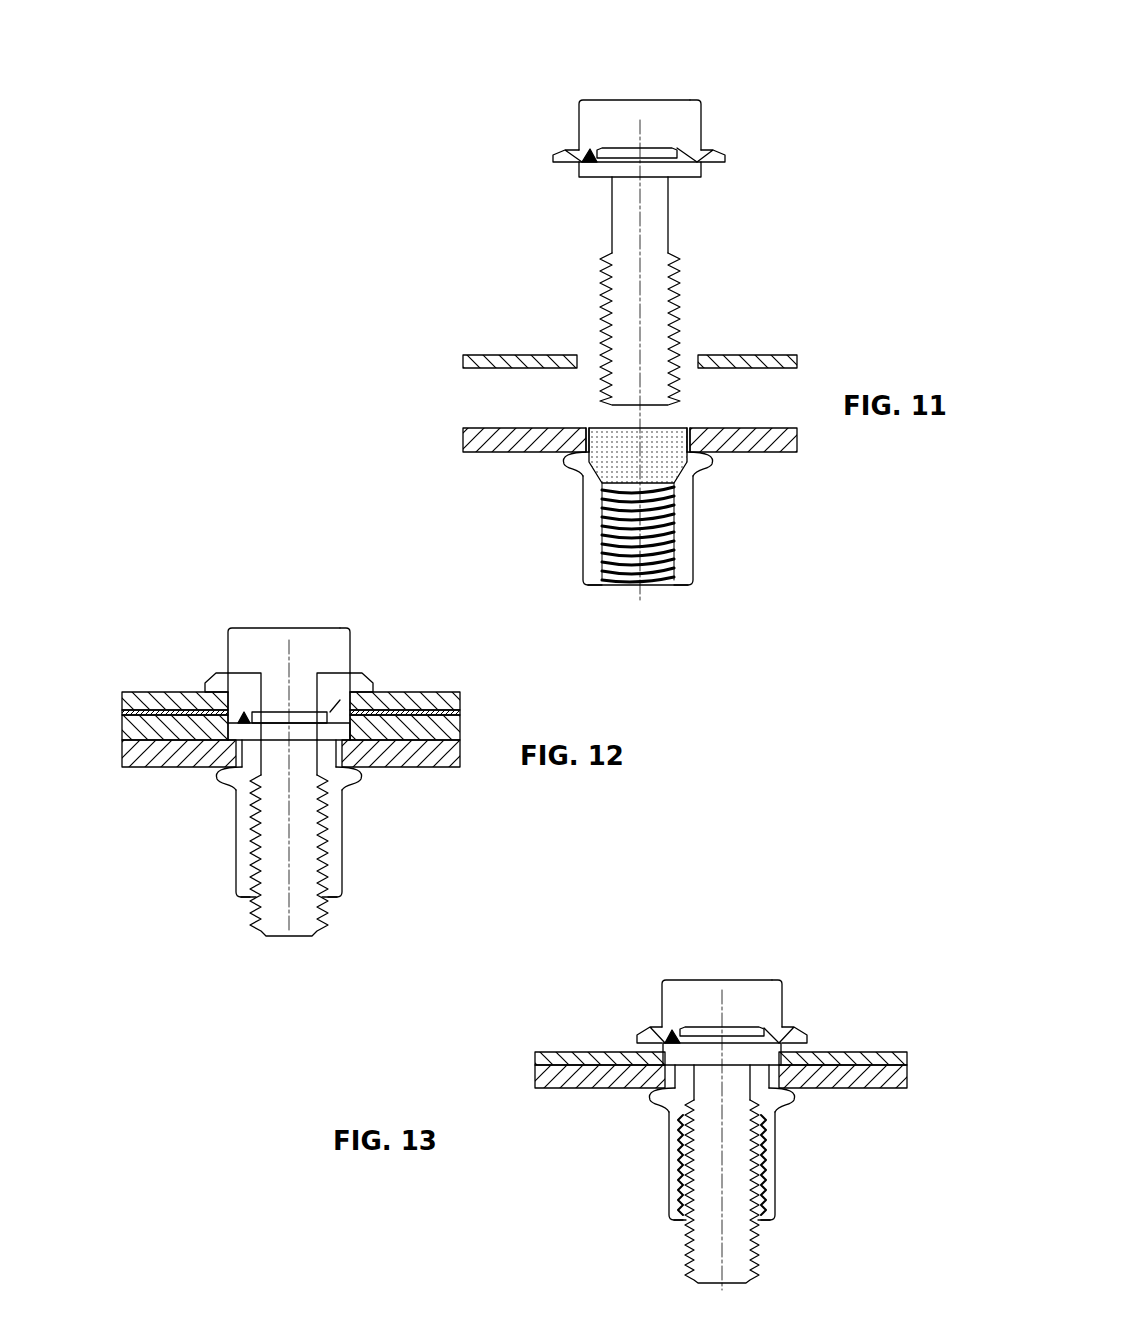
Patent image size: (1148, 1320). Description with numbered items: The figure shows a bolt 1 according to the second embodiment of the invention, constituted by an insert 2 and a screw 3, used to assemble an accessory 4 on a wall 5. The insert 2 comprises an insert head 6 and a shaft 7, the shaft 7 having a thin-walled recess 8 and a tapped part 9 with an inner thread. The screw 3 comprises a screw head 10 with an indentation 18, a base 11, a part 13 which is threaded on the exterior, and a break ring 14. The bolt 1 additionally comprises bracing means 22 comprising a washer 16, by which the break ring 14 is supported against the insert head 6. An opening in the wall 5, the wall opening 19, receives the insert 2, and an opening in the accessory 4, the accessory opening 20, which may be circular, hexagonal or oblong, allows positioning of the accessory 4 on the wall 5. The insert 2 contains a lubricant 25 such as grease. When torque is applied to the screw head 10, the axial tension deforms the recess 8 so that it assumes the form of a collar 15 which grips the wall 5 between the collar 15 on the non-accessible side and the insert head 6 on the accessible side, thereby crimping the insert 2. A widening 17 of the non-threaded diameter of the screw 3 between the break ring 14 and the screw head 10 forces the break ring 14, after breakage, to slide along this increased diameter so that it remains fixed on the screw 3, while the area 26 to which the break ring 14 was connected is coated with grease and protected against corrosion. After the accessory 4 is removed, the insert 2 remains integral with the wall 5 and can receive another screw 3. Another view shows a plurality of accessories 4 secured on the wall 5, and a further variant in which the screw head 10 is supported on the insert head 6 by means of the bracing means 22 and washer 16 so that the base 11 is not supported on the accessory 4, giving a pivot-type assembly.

In FIG. 11, the bolt 1 is at (555, 105).
In FIG. 12, the bolt 1 is at (160, 592).
In FIG. 13, the bolt 1 is at (617, 945).
In FIG. 11, the insert 2 is at (565, 550).
In FIG. 12, the insert 2 is at (218, 868).
In FIG. 13, the insert 2 is at (645, 1192).
In FIG. 11, the screw 3 is at (585, 97).
In FIG. 12, the screw 3 is at (232, 625).
In FIG. 13, the screw 3 is at (667, 960).
In FIG. 11, the accessory 4 is at (463, 355).
In FIG. 12, the accessory 4 is at (122, 692).
In FIG. 13, the accessory 4 is at (535, 1052).
In FIG. 11, the wall 5 is at (463, 432).
In FIG. 12, the wall 5 is at (122, 752).
In FIG. 13, the wall 5 is at (535, 1080).
In FIG. 11, the insert head 6 is at (586, 430).
In FIG. 12, the insert head 6 is at (225, 740).
In FIG. 13, the insert head 6 is at (660, 1070).
In FIG. 11, the shaft 7 is at (580, 487).
In FIG. 12, the shaft 7 is at (232, 800).
In FIG. 13, the shaft 7 is at (662, 1128).
In FIG. 11, the recess 8 is at (566, 456).
In FIG. 12, the recess 8 is at (232, 770).
In FIG. 13, the recess 8 is at (655, 1093).
In FIG. 11, the tapped part 9 is at (620, 585).
In FIG. 12, the tapped part 9 is at (255, 895).
In FIG. 13, the tapped part 9 is at (685, 1218).
In FIG. 11, the screw head 10 is at (685, 108).
In FIG. 12, the screw head 10 is at (338, 628).
In FIG. 13, the screw head 10 is at (770, 965).
In FIG. 11, the base 11 is at (720, 155).
In FIG. 12, the base 11 is at (368, 688).
In FIG. 13, the base 11 is at (800, 1035).
In FIG. 11, the threaded part 13 is at (676, 290).
In FIG. 12, the threaded part 13 is at (328, 900).
In FIG. 13, the threaded part 13 is at (758, 1230).
In FIG. 11, the break ring 14 is at (624, 150).
In FIG. 12, the break ring 14 is at (275, 712).
In FIG. 13, the break ring 14 is at (702, 1027).
In FIG. 11, the collar 15 is at (712, 455).
In FIG. 12, the collar 15 is at (345, 775).
In FIG. 13, the collar 15 is at (790, 1100).
In FIG. 11, the washer 16 is at (708, 150).
In FIG. 12, the washer 16 is at (338, 720).
In FIG. 13, the washer 16 is at (767, 1050).
In FIG. 11, the widening 17 is at (615, 190).
In FIG. 11, the indentation 18 is at (700, 112).
In FIG. 12, the indentation 18 is at (350, 645).
In FIG. 13, the indentation 18 is at (783, 990).
In FIG. 11, the wall opening 19 is at (718, 445).
In FIG. 11, the accessory opening 20 is at (720, 358).
In FIG. 11, the bracing means 22 is at (583, 155).
In FIG. 12, the bracing means 22 is at (242, 710).
In FIG. 13, the bracing means 22 is at (672, 1033).
In FIG. 11, the lubricant 25 is at (665, 435).
In FIG. 11, the area 26 is at (668, 218).